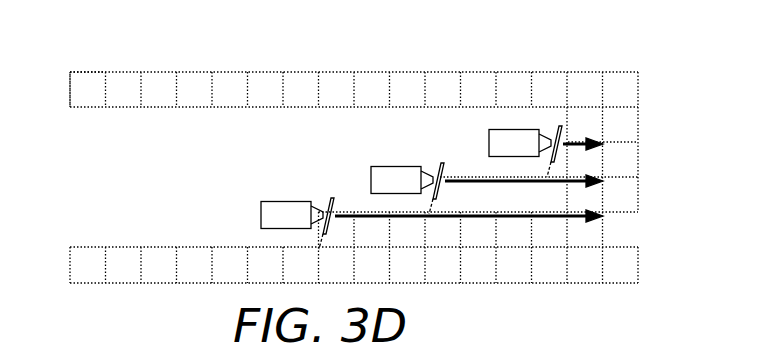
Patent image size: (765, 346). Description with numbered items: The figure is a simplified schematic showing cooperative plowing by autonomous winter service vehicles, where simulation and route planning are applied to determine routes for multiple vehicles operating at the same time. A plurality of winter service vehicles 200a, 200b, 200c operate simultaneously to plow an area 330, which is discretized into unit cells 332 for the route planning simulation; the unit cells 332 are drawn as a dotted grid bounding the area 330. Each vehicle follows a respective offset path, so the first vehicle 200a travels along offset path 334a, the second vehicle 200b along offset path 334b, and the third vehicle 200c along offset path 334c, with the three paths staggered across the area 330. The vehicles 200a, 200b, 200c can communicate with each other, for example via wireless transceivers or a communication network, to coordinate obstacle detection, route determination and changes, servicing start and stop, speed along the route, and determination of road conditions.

The area 330 is at (126, 82).
The unit cells 332 is at (70, 72).
The winter service vehicle 200a is at (488, 132).
The winter service vehicle 200b is at (371, 170).
The winter service vehicle 200c is at (261, 205).
The offset path 334a is at (604, 143).
The offset path 334b is at (604, 180).
The offset path 334c is at (604, 215).